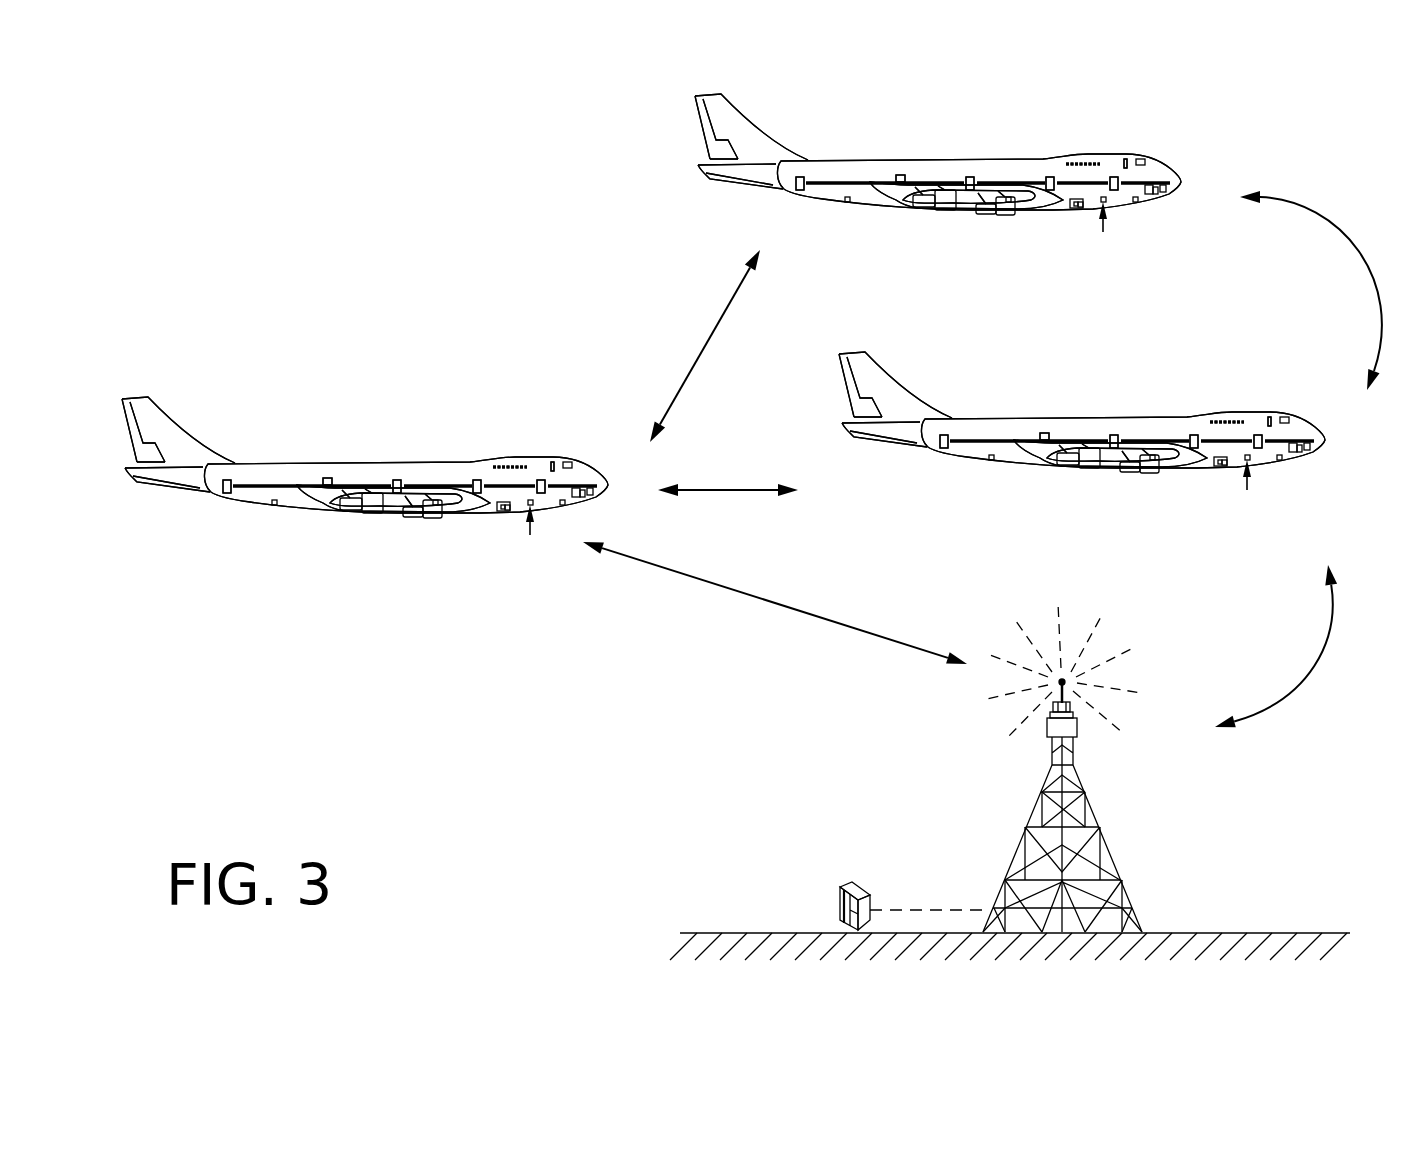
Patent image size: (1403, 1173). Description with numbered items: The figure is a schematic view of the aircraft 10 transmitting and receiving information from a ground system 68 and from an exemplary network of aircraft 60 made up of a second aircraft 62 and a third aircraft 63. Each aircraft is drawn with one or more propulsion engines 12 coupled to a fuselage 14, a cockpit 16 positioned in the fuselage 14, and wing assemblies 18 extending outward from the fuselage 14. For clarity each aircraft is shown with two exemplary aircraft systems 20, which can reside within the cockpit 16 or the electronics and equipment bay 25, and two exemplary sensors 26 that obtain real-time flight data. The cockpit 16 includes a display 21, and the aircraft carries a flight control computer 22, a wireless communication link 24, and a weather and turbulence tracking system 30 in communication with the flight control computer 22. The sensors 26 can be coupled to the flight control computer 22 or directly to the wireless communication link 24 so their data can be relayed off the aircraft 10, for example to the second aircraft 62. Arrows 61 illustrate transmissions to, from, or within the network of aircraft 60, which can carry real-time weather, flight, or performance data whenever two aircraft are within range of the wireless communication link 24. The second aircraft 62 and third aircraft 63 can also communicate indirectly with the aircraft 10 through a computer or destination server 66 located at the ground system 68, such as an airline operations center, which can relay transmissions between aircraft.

The aircraft 10 is at (365, 450).
The propulsion engine 12 is at (367, 505).
The fuselage 14 is at (472, 458).
The cockpit 16 is at (572, 464).
The wing assembly 18 is at (312, 487).
The aircraft system 20 is at (274, 506).
The display 21 is at (595, 489).
The flight control computer 22 is at (574, 504).
The wireless communication link 24 is at (585, 501).
The electronics and equipment bay 25 is at (498, 512).
The sensor 26 is at (435, 506).
The weather and turbulence tracking system 30 is at (533, 540).
The network of aircraft 60 is at (1252, 138).
The arrows 61 is at (708, 328).
The second aircraft 62 is at (938, 147).
The third aircraft 63 is at (1082, 405).
The destination server 66 is at (848, 883).
The ground system 68 is at (1127, 810).